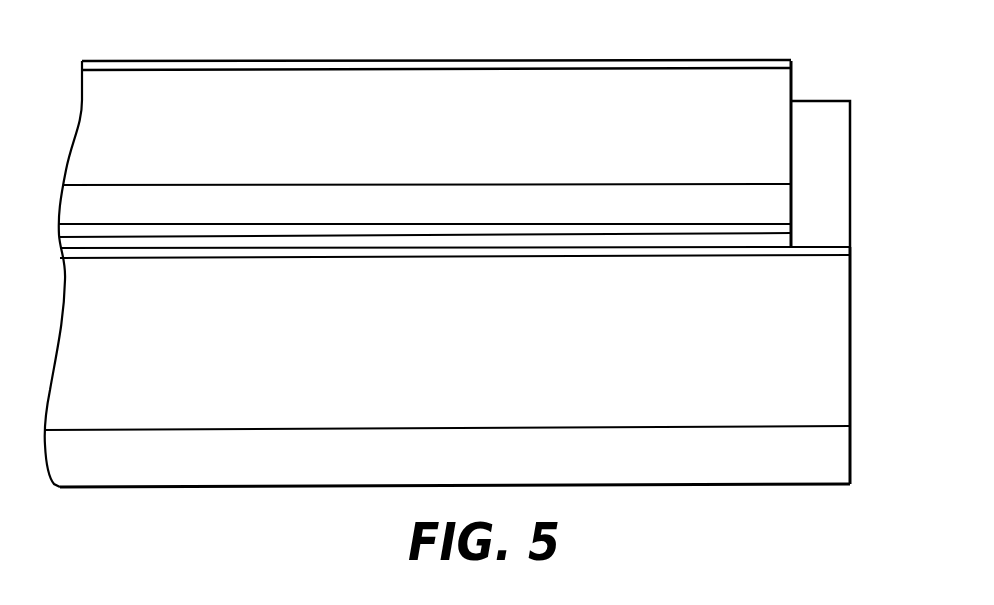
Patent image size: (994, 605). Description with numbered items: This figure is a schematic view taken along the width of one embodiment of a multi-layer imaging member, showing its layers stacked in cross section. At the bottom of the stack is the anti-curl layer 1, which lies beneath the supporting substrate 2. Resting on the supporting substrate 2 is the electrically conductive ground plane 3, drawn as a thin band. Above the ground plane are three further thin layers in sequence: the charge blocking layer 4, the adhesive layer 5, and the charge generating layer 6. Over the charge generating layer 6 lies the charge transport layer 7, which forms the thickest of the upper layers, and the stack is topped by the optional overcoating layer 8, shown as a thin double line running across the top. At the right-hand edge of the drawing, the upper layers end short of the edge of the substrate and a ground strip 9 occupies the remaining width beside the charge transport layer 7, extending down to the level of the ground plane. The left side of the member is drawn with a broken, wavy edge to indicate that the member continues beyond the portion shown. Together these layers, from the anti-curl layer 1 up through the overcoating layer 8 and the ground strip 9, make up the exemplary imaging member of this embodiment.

The anti-curl layer 1 is at (843, 457).
The supporting substrate 2 is at (843, 335).
The electrically conductive ground plane 3 is at (843, 250).
The charge blocking layer 4 is at (783, 238).
The adhesive layer 5 is at (783, 228).
The charge generating layer 6 is at (783, 205).
The charge transport layer 7 is at (778, 87).
The optional overcoating layer 8 is at (590, 60).
The ground strip 9 is at (840, 100).